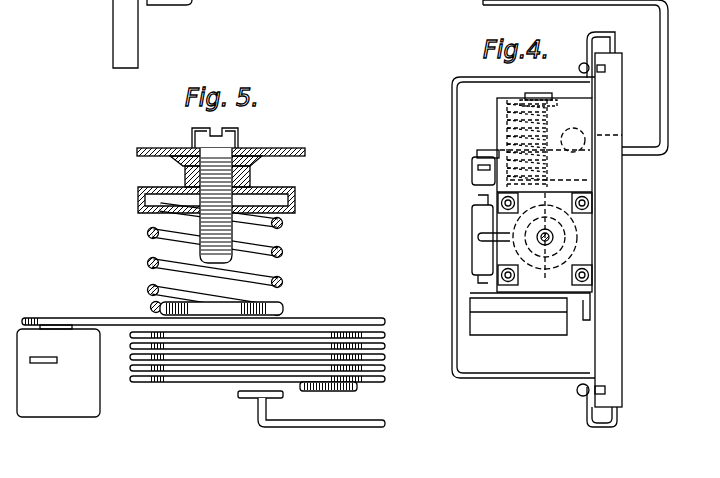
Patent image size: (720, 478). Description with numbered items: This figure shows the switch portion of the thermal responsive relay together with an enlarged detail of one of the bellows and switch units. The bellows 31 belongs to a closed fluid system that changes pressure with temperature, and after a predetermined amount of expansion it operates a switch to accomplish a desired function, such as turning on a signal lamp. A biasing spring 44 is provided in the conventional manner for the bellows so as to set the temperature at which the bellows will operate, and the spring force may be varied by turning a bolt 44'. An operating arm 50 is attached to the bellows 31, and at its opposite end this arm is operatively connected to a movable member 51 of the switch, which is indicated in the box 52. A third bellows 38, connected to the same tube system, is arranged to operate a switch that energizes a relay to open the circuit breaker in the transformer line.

In FIG. 5, the bellows 31 is at (362, 332).
In FIG. 4, the bellows 31 is at (597, 176).
In FIG. 4, the third bellows 38 is at (596, 237).
In FIG. 5, the biasing spring 44 is at (231, 261).
In FIG. 4, the biasing spring 44 is at (506, 143).
In FIG. 5, the bolt 44' is at (221, 191).
In FIG. 4, the bolt 44' is at (543, 81).
In FIG. 5, the operating arm 50 is at (86, 319).
In FIG. 4, the operating arm 50 is at (477, 150).
In FIG. 5, the movable member 51 is at (51, 325).
In FIG. 5, the box 52 is at (93, 400).
In FIG. 4, the box 52 is at (470, 172).